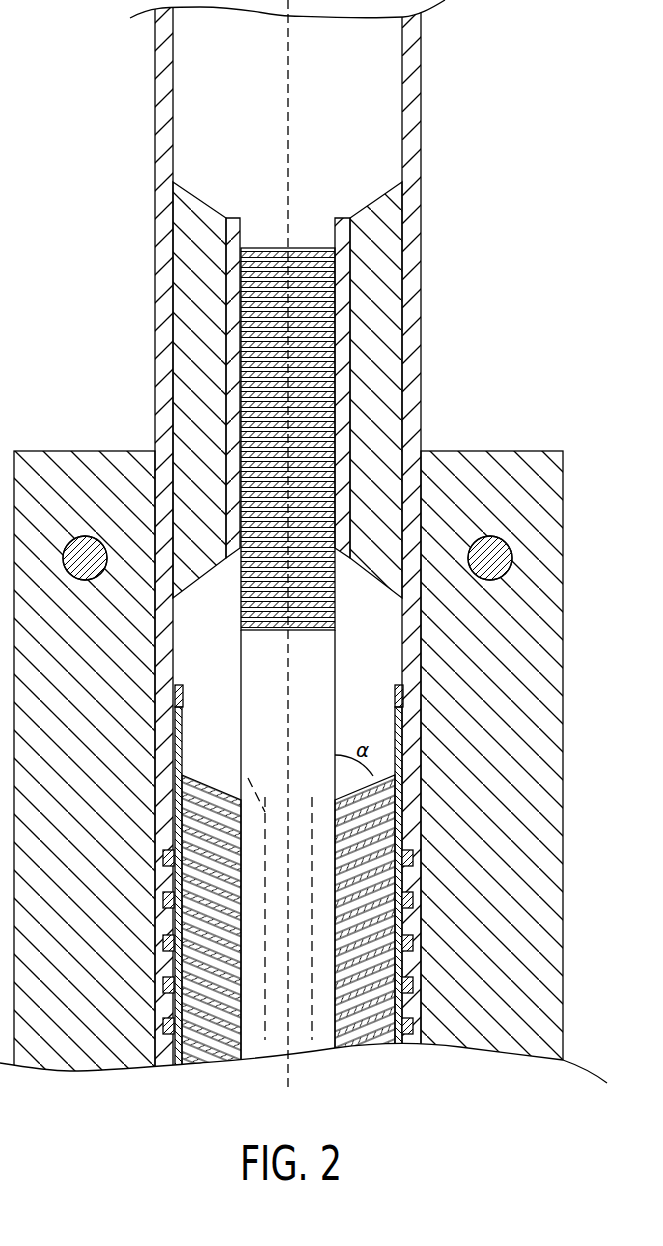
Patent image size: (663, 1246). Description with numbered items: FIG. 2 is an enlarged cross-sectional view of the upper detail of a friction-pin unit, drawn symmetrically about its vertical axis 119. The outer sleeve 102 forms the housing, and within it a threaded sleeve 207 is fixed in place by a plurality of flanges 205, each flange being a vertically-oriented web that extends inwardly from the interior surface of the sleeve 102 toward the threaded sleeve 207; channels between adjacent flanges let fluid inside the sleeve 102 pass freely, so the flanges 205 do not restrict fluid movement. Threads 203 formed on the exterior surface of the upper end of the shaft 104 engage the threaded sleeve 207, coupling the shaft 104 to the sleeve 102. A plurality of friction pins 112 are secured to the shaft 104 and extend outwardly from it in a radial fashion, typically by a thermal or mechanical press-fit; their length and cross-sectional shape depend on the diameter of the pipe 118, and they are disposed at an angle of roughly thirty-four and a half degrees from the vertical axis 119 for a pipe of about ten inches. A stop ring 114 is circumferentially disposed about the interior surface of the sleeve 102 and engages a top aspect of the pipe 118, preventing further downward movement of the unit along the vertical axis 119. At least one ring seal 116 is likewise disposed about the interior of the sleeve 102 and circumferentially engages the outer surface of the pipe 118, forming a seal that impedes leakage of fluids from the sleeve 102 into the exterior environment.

The sleeve 102 is at (163, 256).
The shaft 104 is at (248, 778).
The friction pins 112 is at (363, 1030).
The stop ring 114 is at (395, 697).
The ring seal 116 is at (413, 900).
The pipe 118 is at (398, 740).
The vertical axis 119 is at (290, 88).
The threads 203 is at (253, 633).
The flanges 205 is at (384, 208).
The threaded sleeve 207 is at (242, 331).